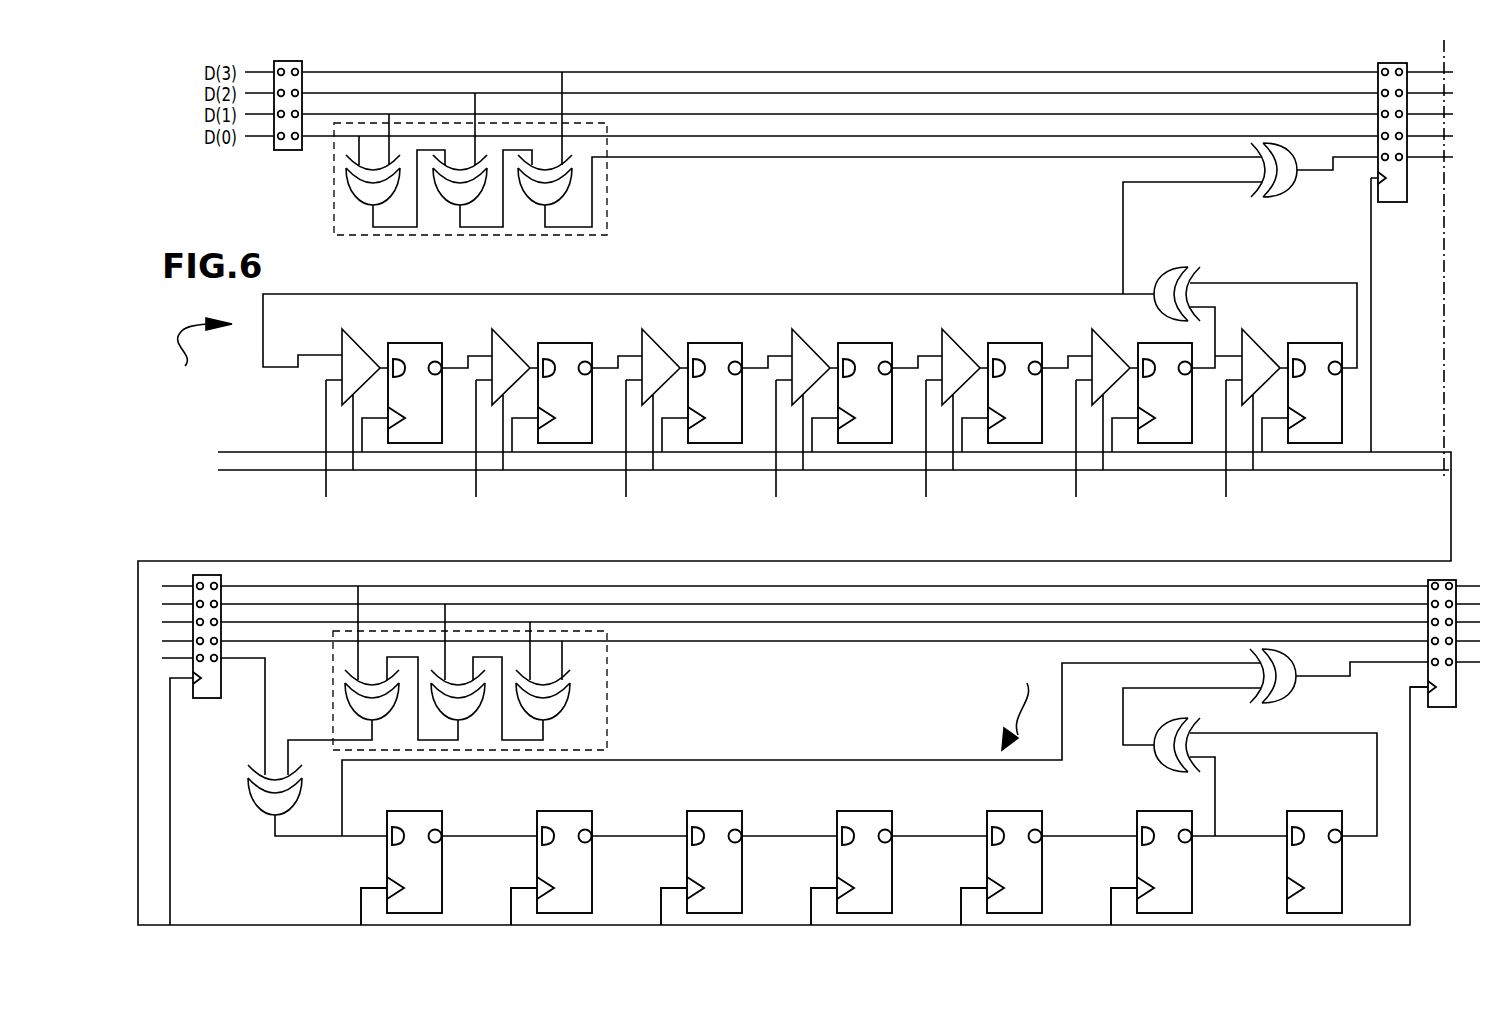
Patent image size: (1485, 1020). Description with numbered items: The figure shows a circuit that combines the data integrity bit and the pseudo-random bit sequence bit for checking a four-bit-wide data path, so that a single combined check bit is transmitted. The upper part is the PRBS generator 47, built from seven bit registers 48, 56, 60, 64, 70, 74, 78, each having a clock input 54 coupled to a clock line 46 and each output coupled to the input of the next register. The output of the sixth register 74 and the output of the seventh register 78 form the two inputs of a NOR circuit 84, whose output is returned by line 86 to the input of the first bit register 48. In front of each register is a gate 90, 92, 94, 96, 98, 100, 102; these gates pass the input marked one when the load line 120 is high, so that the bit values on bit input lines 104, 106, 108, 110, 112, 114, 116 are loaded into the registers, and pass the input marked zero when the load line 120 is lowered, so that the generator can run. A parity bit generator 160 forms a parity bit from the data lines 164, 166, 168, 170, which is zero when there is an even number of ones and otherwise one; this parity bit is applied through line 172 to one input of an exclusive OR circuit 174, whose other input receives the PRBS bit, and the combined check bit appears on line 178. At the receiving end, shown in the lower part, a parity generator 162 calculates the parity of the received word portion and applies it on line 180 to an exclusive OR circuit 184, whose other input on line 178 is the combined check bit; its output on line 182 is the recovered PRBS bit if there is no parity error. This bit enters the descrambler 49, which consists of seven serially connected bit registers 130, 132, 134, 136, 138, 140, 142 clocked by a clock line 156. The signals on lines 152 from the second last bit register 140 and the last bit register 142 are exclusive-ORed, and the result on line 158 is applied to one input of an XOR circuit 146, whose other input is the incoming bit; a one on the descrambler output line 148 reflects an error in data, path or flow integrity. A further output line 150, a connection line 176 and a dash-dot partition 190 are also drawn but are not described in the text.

The clock line 46 is at (243, 452).
The pseudo-random bit sequence generator 47 is at (194, 353).
The bit register 48 is at (420, 343).
The descrambler 49 is at (1026, 700).
The clock input 54 is at (378, 420).
The bit register 56 is at (562, 343).
The bit register 60 is at (718, 344).
The bit register 64 is at (870, 344).
The bit register 70 is at (1020, 344).
The bit register 74 is at (1163, 344).
The bit register 78 is at (1313, 344).
The NOR circuit 84 is at (1170, 268).
The line 86 is at (442, 293).
The gate 90 is at (366, 338).
The gate 92 is at (517, 338).
The gate 94 is at (663, 338).
The gate 96 is at (813, 338).
The gate 98 is at (965, 338).
The gate 100 is at (1104, 338).
The gate 102 is at (1263, 350).
The bit input line 104 is at (326, 428).
The bit input line 106 is at (476, 420).
The bit input line 108 is at (626, 420).
The bit input line 110 is at (776, 420).
The bit input line 112 is at (926, 420).
The bit input line 114 is at (1076, 420).
The bit input line 116 is at (1226, 420).
The load line 120 is at (232, 472).
The bit register 130 is at (436, 811).
The bit register 132 is at (555, 811).
The bit register 134 is at (705, 811).
The bit register 136 is at (855, 811).
The bit register 138 is at (1005, 811).
The bit register 140 is at (1157, 811).
The bit register 142 is at (1320, 811).
The XOR circuit 146 is at (1297, 692).
The line 148 is at (1392, 663).
The flip-flop output line 150 is at (1370, 838).
The lines 152 is at (1230, 838).
The clock line 156 is at (253, 925).
The line 158 is at (830, 760).
The parity bit generator 160 is at (334, 178).
The parity generator 162 is at (607, 722).
The line 164 is at (710, 73).
The line 166 is at (760, 94).
The line 168 is at (832, 115).
The line 170 is at (896, 137).
The line 172 is at (988, 158).
The exclusive OR circuit 174 is at (1278, 192).
The feedback connection line 176 is at (1282, 283).
The line 178 is at (1312, 171).
The line 180 is at (305, 740).
The line 182 is at (302, 837).
The exclusive OR circuit 184 is at (252, 795).
The partition boundary 190 is at (1403, 237).